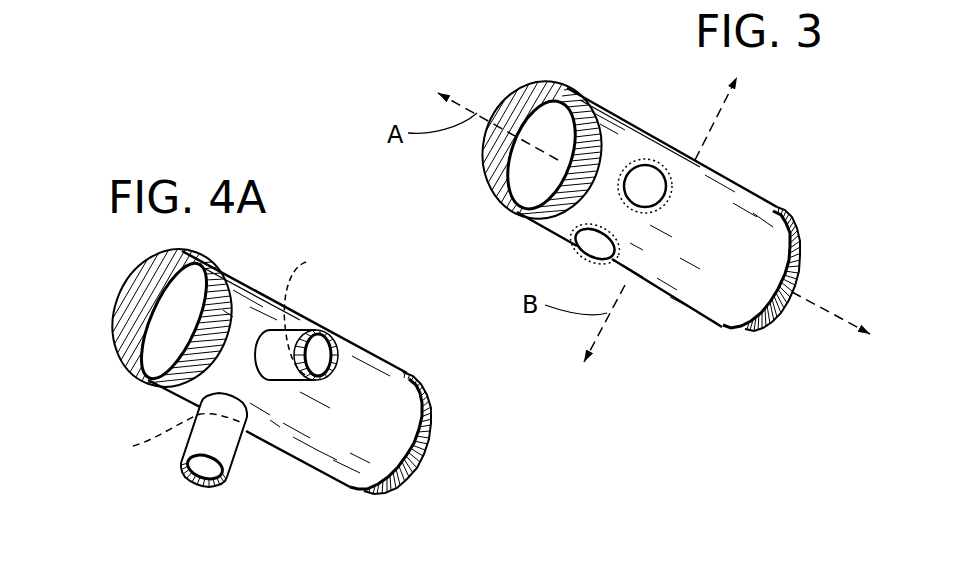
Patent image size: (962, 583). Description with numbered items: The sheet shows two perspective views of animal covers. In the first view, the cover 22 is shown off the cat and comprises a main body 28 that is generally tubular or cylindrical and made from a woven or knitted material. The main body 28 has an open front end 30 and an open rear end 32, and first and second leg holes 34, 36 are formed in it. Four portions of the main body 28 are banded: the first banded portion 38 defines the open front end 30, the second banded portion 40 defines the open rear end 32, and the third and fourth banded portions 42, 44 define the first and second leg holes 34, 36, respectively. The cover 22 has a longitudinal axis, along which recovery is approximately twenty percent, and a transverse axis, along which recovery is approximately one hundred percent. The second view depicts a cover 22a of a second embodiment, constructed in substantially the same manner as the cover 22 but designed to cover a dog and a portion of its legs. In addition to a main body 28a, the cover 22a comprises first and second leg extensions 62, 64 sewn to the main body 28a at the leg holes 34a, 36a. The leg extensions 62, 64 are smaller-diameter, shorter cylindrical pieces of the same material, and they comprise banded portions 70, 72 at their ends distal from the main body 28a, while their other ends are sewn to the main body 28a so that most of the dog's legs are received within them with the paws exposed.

In FIG. 3, the cover 22 is at (642, 184).
In FIG. 3, the main body 28 is at (722, 197).
In FIG. 3, the open front end 30 is at (523, 164).
In FIG. 3, the open rear end 32 is at (803, 272).
In FIG. 3, the first leg hole 34 is at (583, 244).
In FIG. 3, the second leg hole 36 is at (646, 172).
In FIG. 3, the first banded portion 38 is at (572, 89).
In FIG. 3, the second banded portion 40 is at (786, 210).
In FIG. 3, the third banded portion 42 is at (565, 242).
In FIG. 3, the fourth banded portion 44 is at (637, 159).
In FIG. 4A, the cover 22a is at (272, 369).
In FIG. 4A, the main body 28a is at (385, 349).
In FIG. 4A, the leg hole 34a is at (164, 437).
In FIG. 4A, the leg hole 36a is at (318, 310).
In FIG. 4A, the first leg extension 62 is at (167, 450).
In FIG. 4A, the second leg extension 64 is at (331, 322).
In FIG. 4A, the banded portion 70 is at (185, 462).
In FIG. 4A, the banded portion 72 is at (333, 333).